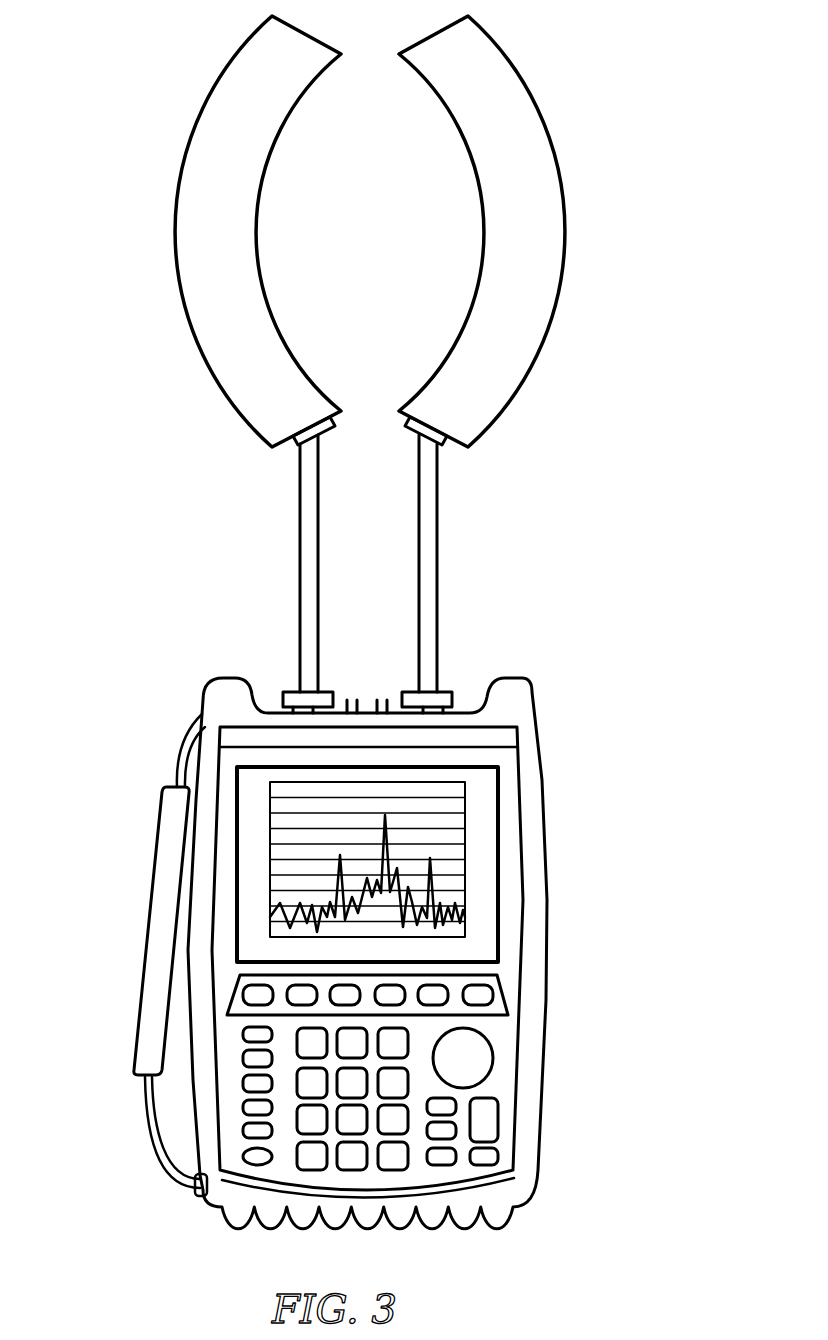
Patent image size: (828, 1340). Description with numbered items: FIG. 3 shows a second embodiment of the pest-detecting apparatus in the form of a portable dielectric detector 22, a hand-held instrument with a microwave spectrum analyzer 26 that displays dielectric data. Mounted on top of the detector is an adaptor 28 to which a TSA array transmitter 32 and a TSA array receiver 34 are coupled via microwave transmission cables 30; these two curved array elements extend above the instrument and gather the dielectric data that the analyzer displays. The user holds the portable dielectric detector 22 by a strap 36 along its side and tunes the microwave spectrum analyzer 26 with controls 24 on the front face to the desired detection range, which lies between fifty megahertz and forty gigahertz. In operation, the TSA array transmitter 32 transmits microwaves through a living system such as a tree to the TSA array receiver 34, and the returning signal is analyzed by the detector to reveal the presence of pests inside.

The portable dielectric detector 22 is at (434, 939).
The controls 24 is at (502, 1073).
The microwave spectrum analyzer 26 is at (480, 832).
The adaptor 28 is at (283, 690).
The microwave transmission cables 30 is at (300, 508).
The TSA array transmitter 32 is at (565, 195).
The TSA array receiver 34 is at (175, 237).
The strap 36 is at (147, 892).